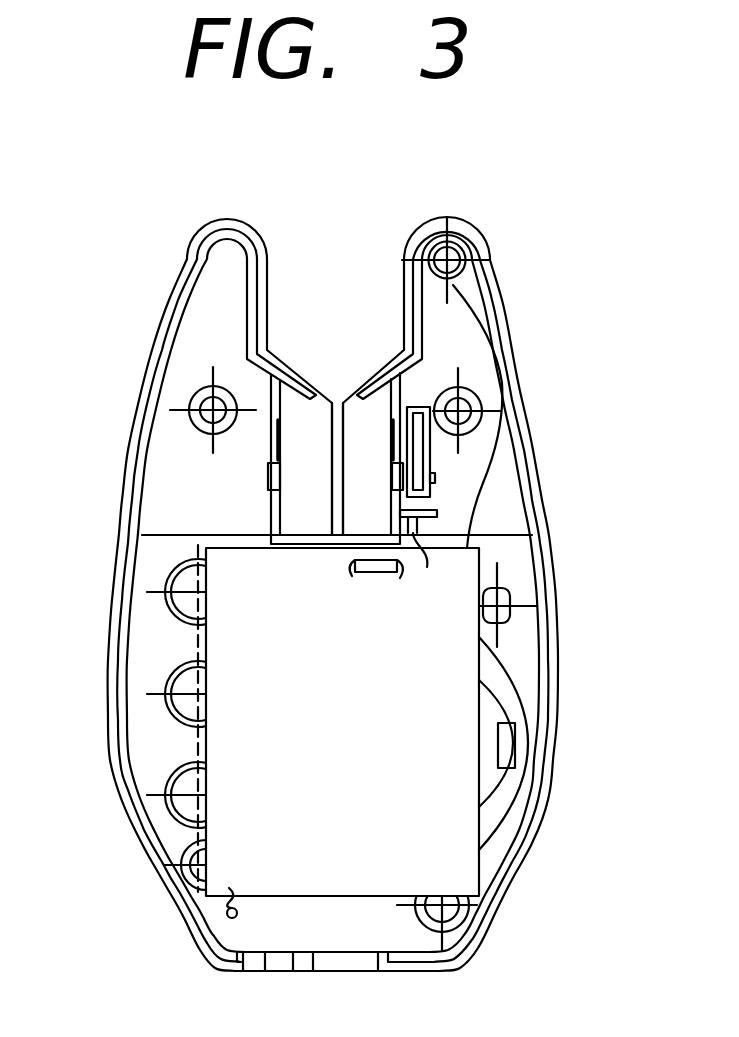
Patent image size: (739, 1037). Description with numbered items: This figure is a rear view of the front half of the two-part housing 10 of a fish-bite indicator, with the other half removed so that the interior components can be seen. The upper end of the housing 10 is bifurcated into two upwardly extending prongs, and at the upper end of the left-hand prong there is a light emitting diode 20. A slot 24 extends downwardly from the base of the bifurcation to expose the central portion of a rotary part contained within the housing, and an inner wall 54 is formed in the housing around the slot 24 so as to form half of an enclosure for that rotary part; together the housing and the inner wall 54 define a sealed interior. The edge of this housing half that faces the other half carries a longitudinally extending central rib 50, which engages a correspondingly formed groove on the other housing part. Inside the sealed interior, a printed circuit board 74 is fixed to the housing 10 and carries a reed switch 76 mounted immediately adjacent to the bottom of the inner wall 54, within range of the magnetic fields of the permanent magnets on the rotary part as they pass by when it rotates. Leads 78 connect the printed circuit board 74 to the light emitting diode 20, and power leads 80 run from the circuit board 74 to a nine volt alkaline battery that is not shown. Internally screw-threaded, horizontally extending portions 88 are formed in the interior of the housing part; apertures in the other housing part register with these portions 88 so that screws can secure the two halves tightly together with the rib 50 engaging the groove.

The housing 10 is at (557, 608).
The light emitting diode (LED) 20 is at (457, 256).
The slot 24 is at (337, 457).
The central rib 50 is at (542, 498).
The inner wall 54 is at (270, 509).
The printed circuit board 74 is at (462, 742).
The reed switch 76 is at (368, 571).
The leads 78 is at (463, 568).
The power leads 80 is at (237, 914).
The internally screw-threaded portions 88 is at (195, 393).